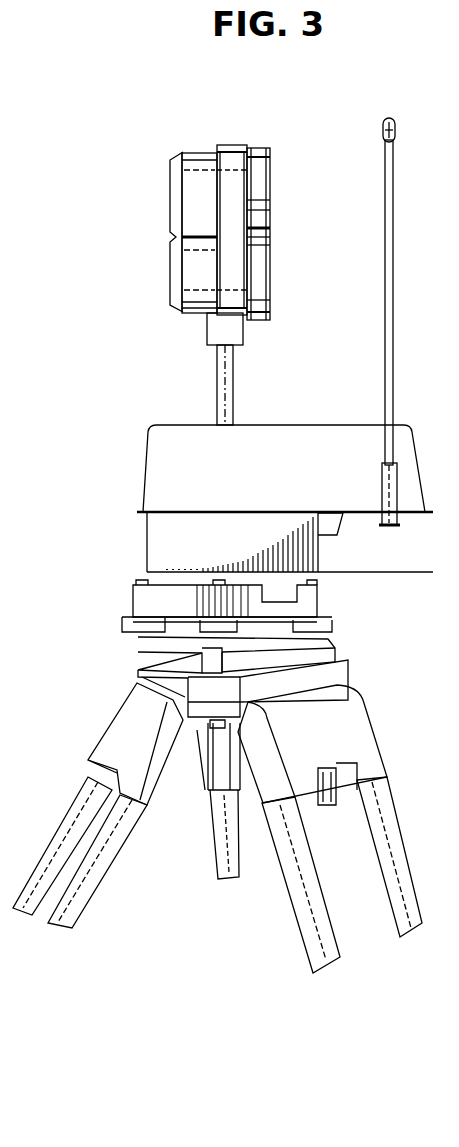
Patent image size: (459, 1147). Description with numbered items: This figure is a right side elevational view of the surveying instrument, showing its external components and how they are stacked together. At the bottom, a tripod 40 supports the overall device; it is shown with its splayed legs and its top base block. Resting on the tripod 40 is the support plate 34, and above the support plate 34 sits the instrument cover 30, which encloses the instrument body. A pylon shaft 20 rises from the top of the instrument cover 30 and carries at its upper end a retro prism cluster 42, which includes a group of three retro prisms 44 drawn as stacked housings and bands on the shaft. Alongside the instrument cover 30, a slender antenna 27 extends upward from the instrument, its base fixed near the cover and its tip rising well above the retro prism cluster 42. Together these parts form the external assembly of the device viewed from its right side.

The pylon shaft 20 is at (233, 412).
The antenna 27 is at (396, 243).
The instrument cover 30 is at (141, 485).
The support plate 34 is at (372, 576).
The tripod 40 is at (355, 676).
The retro prism cluster 42 is at (280, 183).
The retro prisms 44 is at (170, 185).